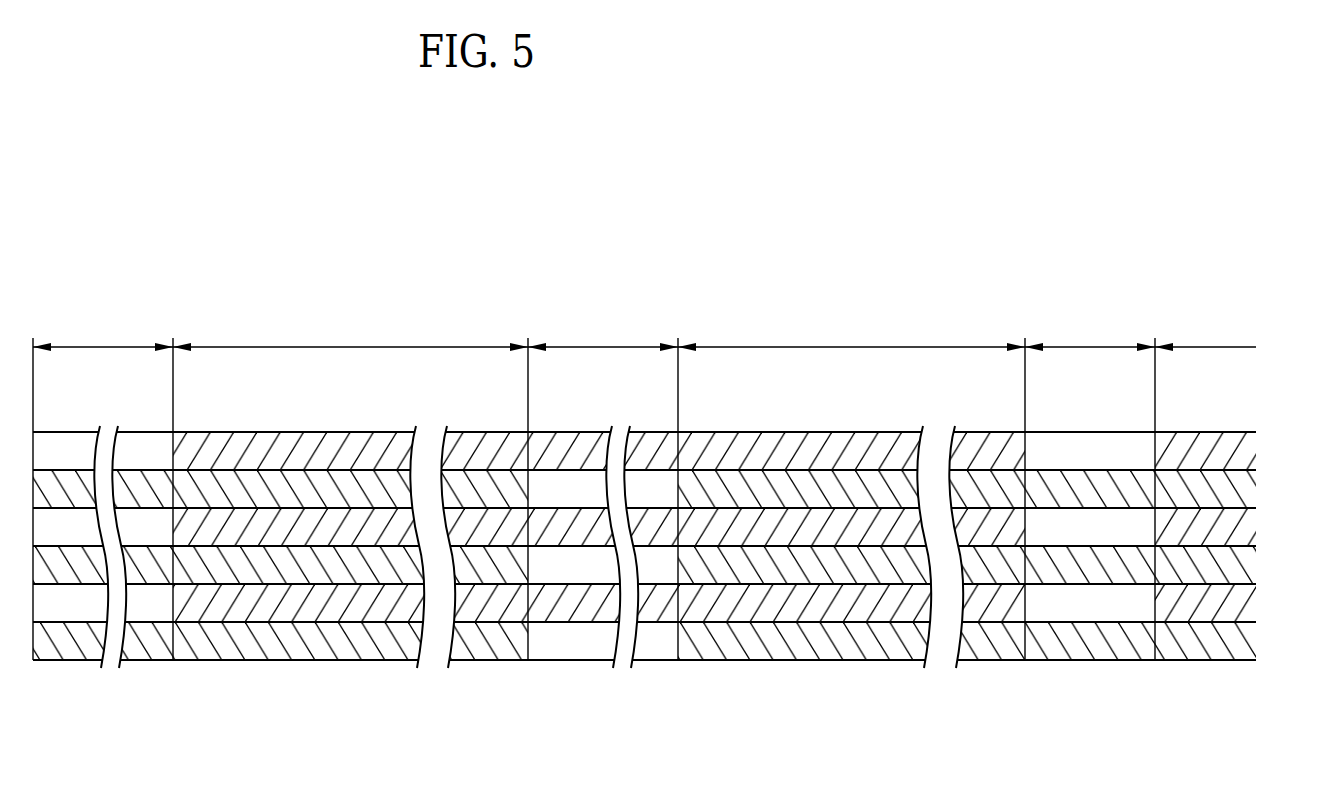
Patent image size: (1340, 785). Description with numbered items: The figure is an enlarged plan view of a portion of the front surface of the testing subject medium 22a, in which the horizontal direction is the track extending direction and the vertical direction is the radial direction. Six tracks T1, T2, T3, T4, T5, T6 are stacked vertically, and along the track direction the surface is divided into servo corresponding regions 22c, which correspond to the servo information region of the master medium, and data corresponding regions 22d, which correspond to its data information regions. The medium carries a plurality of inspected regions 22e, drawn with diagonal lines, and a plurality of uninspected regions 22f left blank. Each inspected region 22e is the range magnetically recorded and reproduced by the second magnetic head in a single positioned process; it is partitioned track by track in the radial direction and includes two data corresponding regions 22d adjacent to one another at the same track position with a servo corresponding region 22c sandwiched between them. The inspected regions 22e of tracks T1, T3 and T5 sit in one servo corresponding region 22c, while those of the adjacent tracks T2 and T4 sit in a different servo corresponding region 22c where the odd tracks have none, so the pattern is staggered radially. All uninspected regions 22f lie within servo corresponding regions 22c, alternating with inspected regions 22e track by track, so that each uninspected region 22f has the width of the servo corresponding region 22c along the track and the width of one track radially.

The testing subject medium 22a is at (772, 294).
The servo corresponding region 22c is at (102, 344).
The data corresponding region 22d is at (343, 344).
The inspected region 22e is at (235, 480).
The uninspected region 22f is at (570, 488).
The track T1 is at (1240, 454).
The track T2 is at (1240, 492).
The track T3 is at (1240, 528).
The track T4 is at (1240, 567).
The track T5 is at (1240, 605).
The track T6 is at (1240, 643).